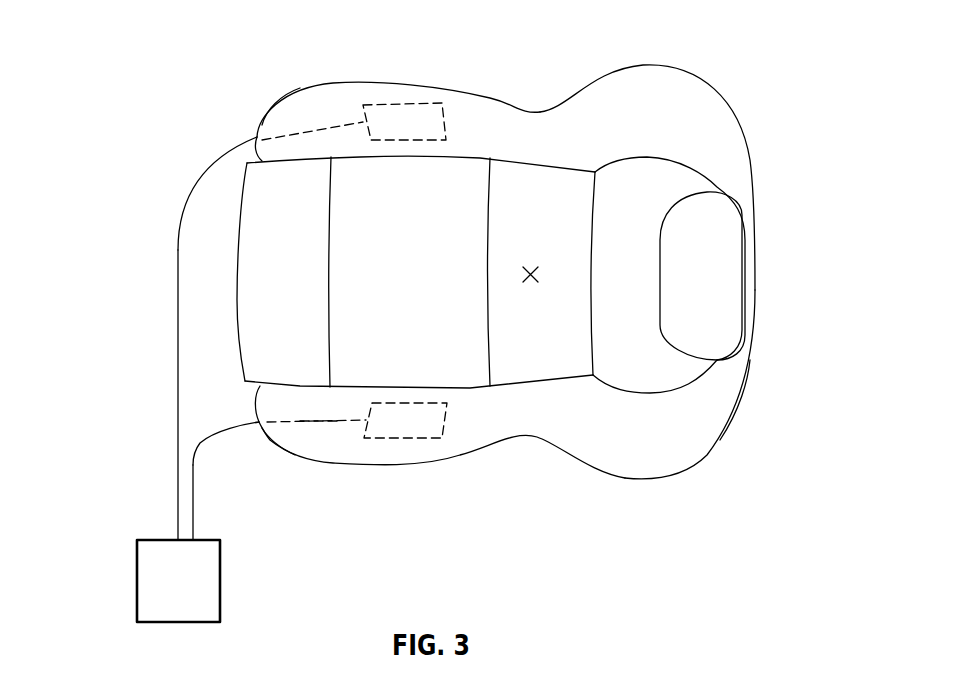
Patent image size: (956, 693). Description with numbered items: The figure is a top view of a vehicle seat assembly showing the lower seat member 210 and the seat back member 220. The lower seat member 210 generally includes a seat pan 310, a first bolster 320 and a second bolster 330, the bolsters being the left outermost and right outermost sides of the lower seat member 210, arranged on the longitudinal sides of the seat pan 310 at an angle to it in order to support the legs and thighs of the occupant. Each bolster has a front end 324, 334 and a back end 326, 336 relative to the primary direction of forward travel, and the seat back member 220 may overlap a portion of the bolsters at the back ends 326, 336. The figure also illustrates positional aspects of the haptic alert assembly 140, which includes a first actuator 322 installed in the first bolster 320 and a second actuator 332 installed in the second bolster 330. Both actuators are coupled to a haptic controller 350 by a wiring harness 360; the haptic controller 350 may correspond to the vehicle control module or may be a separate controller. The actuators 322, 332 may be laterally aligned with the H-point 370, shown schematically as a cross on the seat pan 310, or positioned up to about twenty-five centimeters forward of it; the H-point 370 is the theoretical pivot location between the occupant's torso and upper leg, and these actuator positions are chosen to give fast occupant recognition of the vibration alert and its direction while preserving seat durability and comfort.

The haptic alert assembly 140 is at (215, 489).
The lower seat member 210 is at (481, 481).
The seat back member 220 is at (683, 475).
The seat pan 310 is at (247, 285).
The first bolster 320 is at (270, 408).
The first actuator 322 is at (397, 428).
The front end of first bolster 324 is at (270, 440).
The back end of first bolster 326 is at (708, 455).
The second bolster 330 is at (270, 147).
The second actuator 332 is at (393, 117).
The front end of second bolster 334 is at (272, 103).
The back end of second bolster 336 is at (706, 91).
The haptic controller 350 is at (137, 600).
The wiring harness 360 is at (322, 430).
The H-point 370 is at (531, 281).